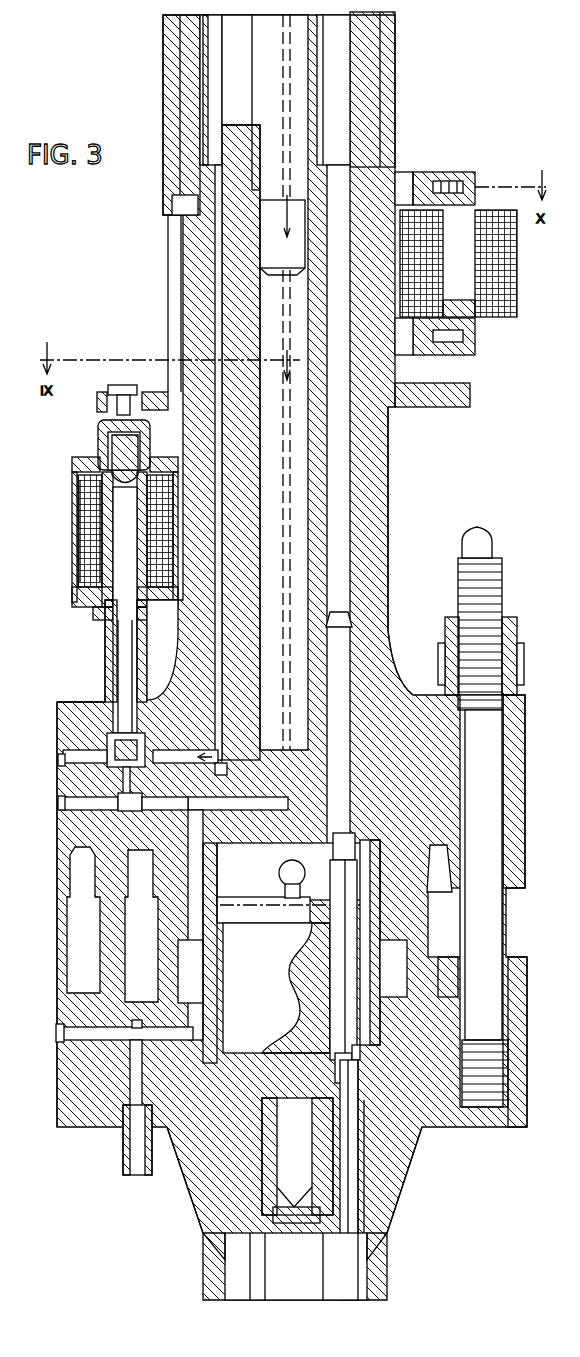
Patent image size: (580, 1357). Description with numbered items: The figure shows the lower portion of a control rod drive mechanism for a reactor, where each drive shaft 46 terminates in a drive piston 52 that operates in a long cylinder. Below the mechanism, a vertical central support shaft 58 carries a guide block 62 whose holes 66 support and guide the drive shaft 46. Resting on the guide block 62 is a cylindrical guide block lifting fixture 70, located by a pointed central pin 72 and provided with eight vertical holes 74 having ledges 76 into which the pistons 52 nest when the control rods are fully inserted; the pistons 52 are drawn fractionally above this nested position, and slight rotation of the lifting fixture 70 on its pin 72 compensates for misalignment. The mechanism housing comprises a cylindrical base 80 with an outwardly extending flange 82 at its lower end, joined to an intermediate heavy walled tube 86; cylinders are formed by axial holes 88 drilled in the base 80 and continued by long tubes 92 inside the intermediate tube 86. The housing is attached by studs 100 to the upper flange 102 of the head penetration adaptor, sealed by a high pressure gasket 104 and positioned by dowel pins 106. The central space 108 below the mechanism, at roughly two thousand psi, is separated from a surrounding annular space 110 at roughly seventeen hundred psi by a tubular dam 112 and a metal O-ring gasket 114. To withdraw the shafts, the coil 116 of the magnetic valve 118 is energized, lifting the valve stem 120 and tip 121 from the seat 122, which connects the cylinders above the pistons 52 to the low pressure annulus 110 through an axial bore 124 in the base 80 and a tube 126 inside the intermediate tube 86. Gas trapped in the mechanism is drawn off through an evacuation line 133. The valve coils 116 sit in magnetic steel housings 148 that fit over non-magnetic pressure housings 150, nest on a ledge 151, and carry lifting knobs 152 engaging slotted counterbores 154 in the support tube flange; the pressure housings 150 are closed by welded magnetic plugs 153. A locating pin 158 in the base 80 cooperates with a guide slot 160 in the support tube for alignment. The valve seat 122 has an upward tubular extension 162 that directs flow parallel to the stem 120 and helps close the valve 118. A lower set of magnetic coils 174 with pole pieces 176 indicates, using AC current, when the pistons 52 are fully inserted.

The drive shaft 46 is at (350, 1213).
The drive piston 52 is at (340, 618).
The central support shaft 58 is at (316, 1263).
The guide block 62 is at (230, 1195).
The hole 66 is at (362, 1185).
The guide block lifting fixture 70 is at (220, 975).
The central pin 72 is at (287, 1130).
The vertical hole 74 is at (356, 1060).
The ledge 76 is at (360, 1060).
The cylindrical base 80 is at (389, 450).
The outwardly extending flange 82 is at (515, 715).
The intermediate heavy walled tube 86 is at (372, 52).
The axial hole 88 is at (350, 480).
The long tube 92 is at (350, 92).
The stud 100 is at (495, 585).
The upper flange 102 is at (520, 1000).
The high pressure gasket 104 is at (425, 905).
The dowel pin 106 is at (68, 925).
The central space 108 is at (278, 958).
The annular space 110 is at (395, 950).
The tubular dam 112 is at (372, 990).
The metal O-ring gasket 114 is at (360, 825).
The coil 116 is at (90, 575).
The magnetic valve 118 is at (86, 633).
The valve stem 120 is at (125, 672).
The tip 121 is at (107, 725).
The valve seat 122 is at (115, 795).
The axial bore 124 is at (225, 330).
The tube 126 is at (196, 82).
The evacuation line 133 is at (290, 556).
The housing 148 is at (78, 530).
The pressure housing 150 is at (108, 650).
The ledge 151 is at (152, 612).
The lifting knob 152 is at (127, 375).
The magnetic plug 153 is at (110, 447).
The slotted counterbore 154 is at (100, 410).
The locating pin 158 is at (172, 210).
The guide slot 160 is at (180, 300).
The tubular extension 162 is at (107, 750).
The magnetic coil 174 is at (505, 268).
The pole piece 176 is at (460, 155).